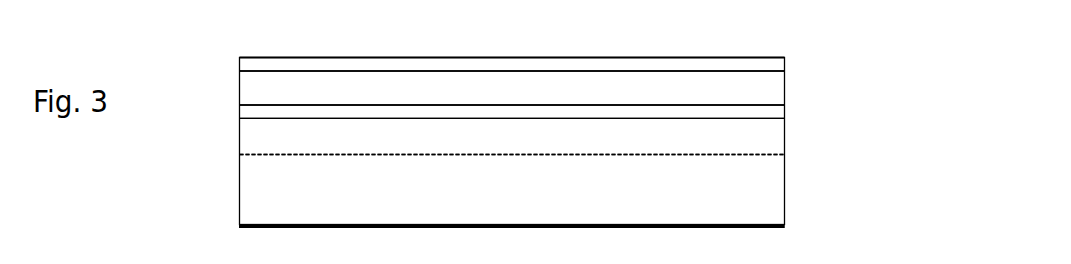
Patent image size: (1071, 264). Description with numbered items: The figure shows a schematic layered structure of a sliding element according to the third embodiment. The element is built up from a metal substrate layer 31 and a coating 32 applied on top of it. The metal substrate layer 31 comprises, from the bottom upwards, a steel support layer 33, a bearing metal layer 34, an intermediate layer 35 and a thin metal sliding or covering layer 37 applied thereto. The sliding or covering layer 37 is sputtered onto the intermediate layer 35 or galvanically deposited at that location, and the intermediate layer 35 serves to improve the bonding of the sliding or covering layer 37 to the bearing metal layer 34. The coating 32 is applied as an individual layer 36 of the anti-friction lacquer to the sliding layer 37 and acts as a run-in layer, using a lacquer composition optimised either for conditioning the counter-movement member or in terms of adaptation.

The metal substrate layer 31 is at (228, 72).
The coating 32 is at (266, 64).
The steel support layer 33 is at (770, 202).
The bearing metal layer 34 is at (770, 138).
The intermediate layer 35 is at (770, 113).
The individual layer of anti-friction lacquer 36 is at (772, 65).
The metal sliding or covering layer 37 is at (770, 95).